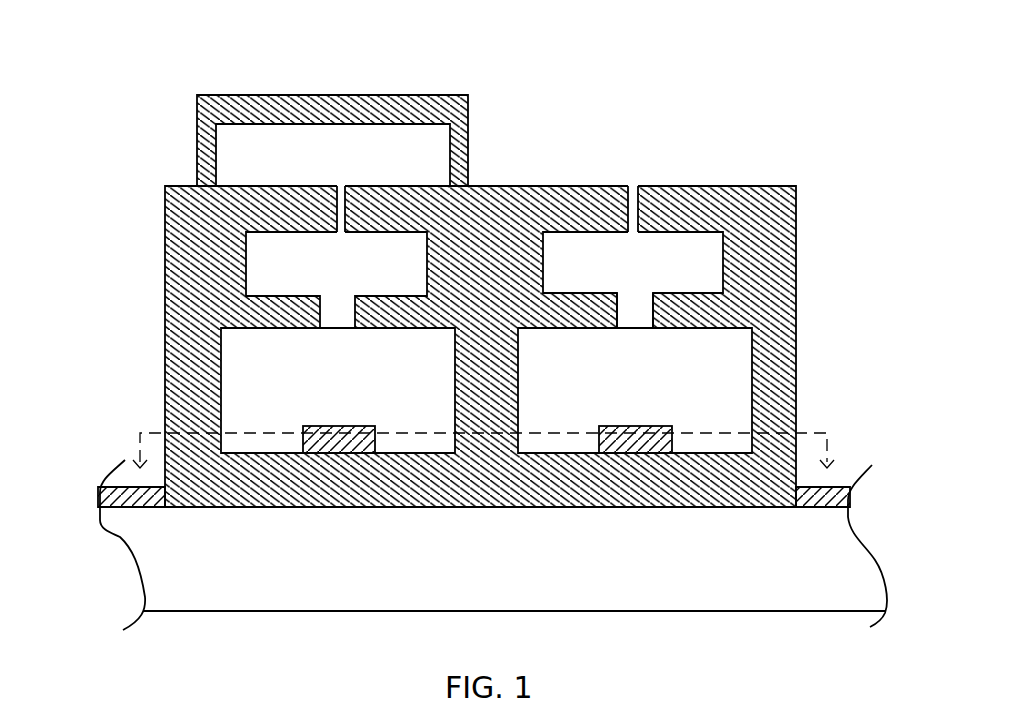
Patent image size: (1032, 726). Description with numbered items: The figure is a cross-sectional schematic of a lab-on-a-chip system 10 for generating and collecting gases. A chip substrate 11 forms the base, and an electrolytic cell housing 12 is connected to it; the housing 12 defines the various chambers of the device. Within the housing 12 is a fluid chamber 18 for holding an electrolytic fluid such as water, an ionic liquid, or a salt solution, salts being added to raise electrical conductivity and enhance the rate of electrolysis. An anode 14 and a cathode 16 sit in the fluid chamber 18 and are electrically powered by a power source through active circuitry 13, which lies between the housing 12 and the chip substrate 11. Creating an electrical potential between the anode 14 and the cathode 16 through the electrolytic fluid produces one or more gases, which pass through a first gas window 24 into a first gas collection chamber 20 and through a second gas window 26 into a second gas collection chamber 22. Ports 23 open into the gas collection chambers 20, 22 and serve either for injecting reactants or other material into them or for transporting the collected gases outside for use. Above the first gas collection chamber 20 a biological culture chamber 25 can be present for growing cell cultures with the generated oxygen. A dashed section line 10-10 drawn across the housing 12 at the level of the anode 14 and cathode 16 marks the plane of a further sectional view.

The lab-on-a-chip system 10 is at (172, 152).
The chip substrate 11 is at (203, 562).
The electrolytic cell housing 12 is at (776, 245).
The active circuitry 13 is at (137, 509).
The anode 14 is at (340, 451).
The cathode 16 is at (642, 451).
The fluid chamber 18 is at (257, 390).
The first gas collection chamber 20 is at (325, 248).
The second gas collection chamber 22 is at (705, 245).
The ports 23 is at (347, 212).
The first gas window 24 is at (338, 310).
The biological culture chamber 25 is at (333, 158).
The second gas window 26 is at (635, 300).
The section line 10-10 is at (778, 433).